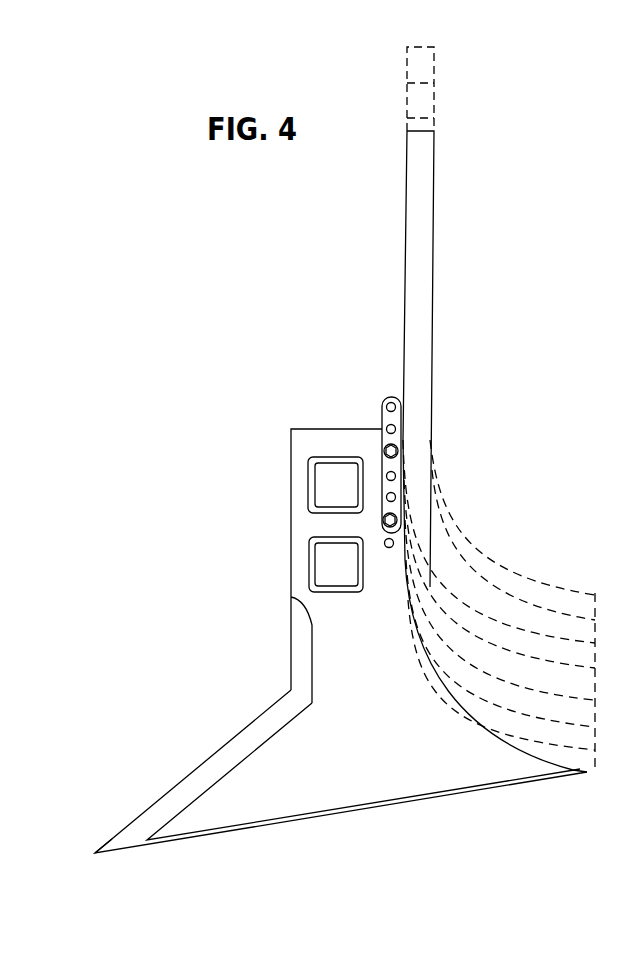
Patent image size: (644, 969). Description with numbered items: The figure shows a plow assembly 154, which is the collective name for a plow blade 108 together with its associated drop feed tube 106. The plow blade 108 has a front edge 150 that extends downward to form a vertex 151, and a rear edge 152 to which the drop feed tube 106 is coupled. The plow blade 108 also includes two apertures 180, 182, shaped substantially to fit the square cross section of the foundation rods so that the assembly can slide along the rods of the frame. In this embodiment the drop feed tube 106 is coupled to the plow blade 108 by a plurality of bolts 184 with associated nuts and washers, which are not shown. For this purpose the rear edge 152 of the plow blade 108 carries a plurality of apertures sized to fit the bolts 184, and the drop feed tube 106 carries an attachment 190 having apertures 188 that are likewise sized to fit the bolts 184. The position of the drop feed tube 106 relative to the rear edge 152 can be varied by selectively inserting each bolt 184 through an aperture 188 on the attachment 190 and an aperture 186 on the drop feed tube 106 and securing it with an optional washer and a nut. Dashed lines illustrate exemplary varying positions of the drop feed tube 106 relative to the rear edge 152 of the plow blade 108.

The drop feed tube 106 is at (420, 275).
The plow blade 108 is at (280, 750).
The front edge 150 is at (196, 768).
The vertex 151 is at (95, 852).
The rear edge 152 is at (453, 716).
The plow assembly 154 is at (278, 362).
The aperture 180 is at (310, 481).
The aperture 182 is at (310, 568).
The bolt 184 is at (384, 452).
The aperture 186 is at (389, 549).
The aperture 188 is at (388, 397).
The attachment 190 is at (382, 415).